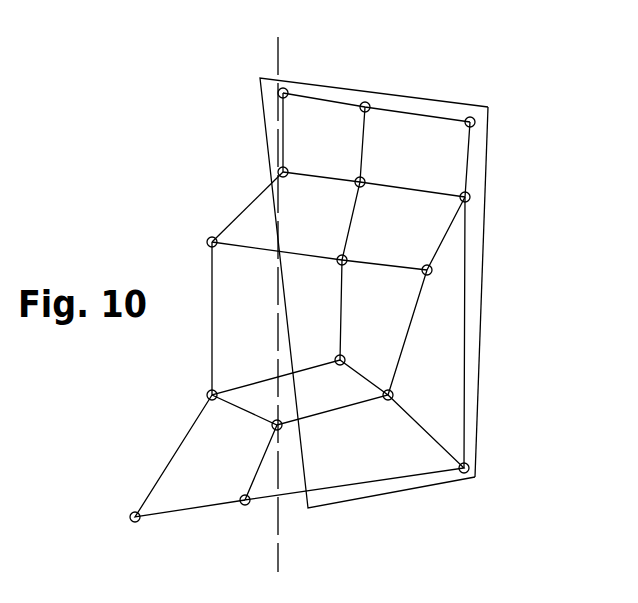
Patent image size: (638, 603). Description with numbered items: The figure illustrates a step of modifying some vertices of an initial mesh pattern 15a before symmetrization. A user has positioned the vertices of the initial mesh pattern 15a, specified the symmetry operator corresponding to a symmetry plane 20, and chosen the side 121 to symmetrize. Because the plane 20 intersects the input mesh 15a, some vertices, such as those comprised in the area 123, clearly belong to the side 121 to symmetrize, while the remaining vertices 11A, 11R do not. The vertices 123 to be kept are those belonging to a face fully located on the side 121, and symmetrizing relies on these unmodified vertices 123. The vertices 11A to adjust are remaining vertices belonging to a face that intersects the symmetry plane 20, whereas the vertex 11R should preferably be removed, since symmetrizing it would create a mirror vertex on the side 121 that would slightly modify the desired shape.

The symmetry plane 20 is at (278, 58).
The initial mesh pattern 15a is at (360, 182).
The side to symmetrize 121 is at (383, 313).
The area of unmodified vertices 123 is at (477, 412).
The vertices to adjust 11A is at (212, 242).
The vertex to remove 11R is at (135, 517).